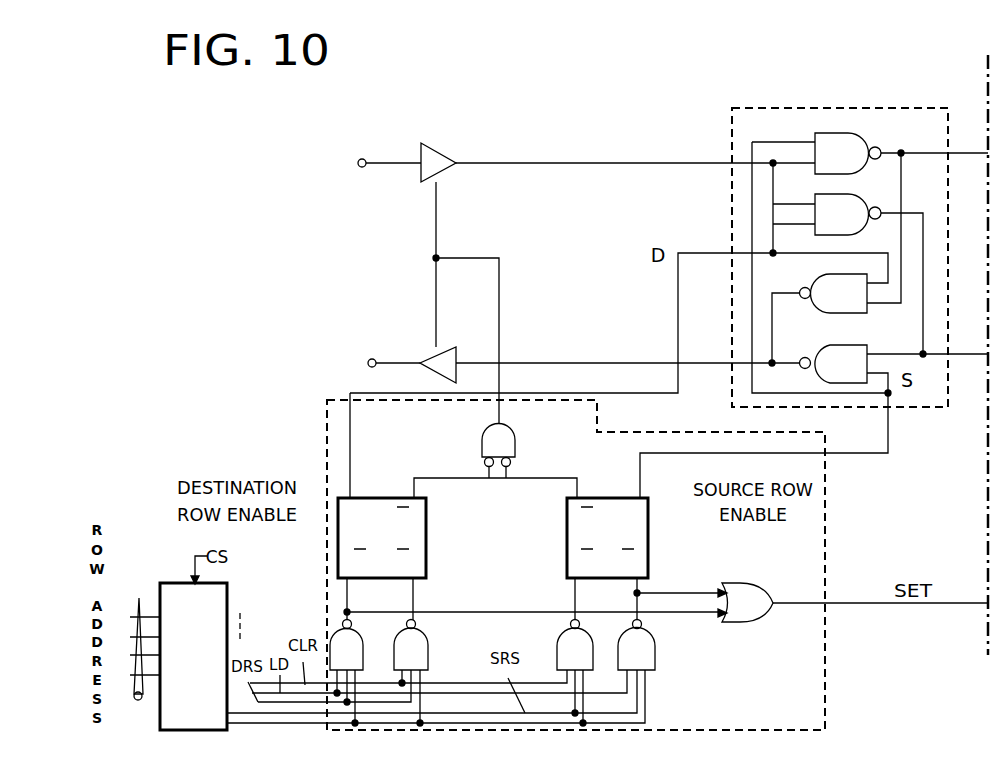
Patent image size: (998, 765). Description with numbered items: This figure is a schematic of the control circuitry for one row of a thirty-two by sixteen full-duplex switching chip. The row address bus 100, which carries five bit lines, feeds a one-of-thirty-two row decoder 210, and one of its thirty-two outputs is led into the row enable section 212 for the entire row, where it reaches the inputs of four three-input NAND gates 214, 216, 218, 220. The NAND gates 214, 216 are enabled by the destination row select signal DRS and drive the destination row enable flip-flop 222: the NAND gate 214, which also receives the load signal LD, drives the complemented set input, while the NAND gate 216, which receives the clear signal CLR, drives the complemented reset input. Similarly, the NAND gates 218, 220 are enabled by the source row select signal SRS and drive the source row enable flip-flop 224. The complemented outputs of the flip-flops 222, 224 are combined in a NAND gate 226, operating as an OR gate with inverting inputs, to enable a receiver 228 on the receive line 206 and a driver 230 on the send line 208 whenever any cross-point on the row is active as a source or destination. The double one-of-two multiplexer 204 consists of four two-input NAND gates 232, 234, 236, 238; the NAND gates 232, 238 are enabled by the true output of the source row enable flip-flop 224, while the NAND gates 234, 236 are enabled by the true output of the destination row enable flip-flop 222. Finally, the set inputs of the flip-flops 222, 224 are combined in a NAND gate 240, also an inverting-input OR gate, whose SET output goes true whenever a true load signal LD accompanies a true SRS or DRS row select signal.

The row address bus 100 is at (141, 638).
The double 1-of-2 multiplexer 204 is at (852, 107).
The external line 206 is at (375, 160).
The external line 208 is at (382, 357).
The 1-of-32 row decoder 210 is at (245, 592).
The row enable section 212 is at (825, 543).
The three-input NAND gate 214 is at (360, 653).
The three-input NAND gate 216 is at (413, 653).
The three-input NAND gate 218 is at (575, 653).
The three-input NAND gate 220 is at (647, 653).
The destination row enable flip-flop 222 is at (428, 537).
The source row enable flip-flop 224 is at (570, 537).
The NAND gate 226 is at (515, 447).
The receiver 228 is at (440, 157).
The driver 230 is at (453, 345).
The two-input NAND gate 232 is at (860, 148).
The two-input NAND gate 234 is at (863, 196).
The two-input NAND gate 236 is at (835, 308).
The two-input NAND gate 238 is at (870, 347).
The NAND gate 240 is at (740, 595).